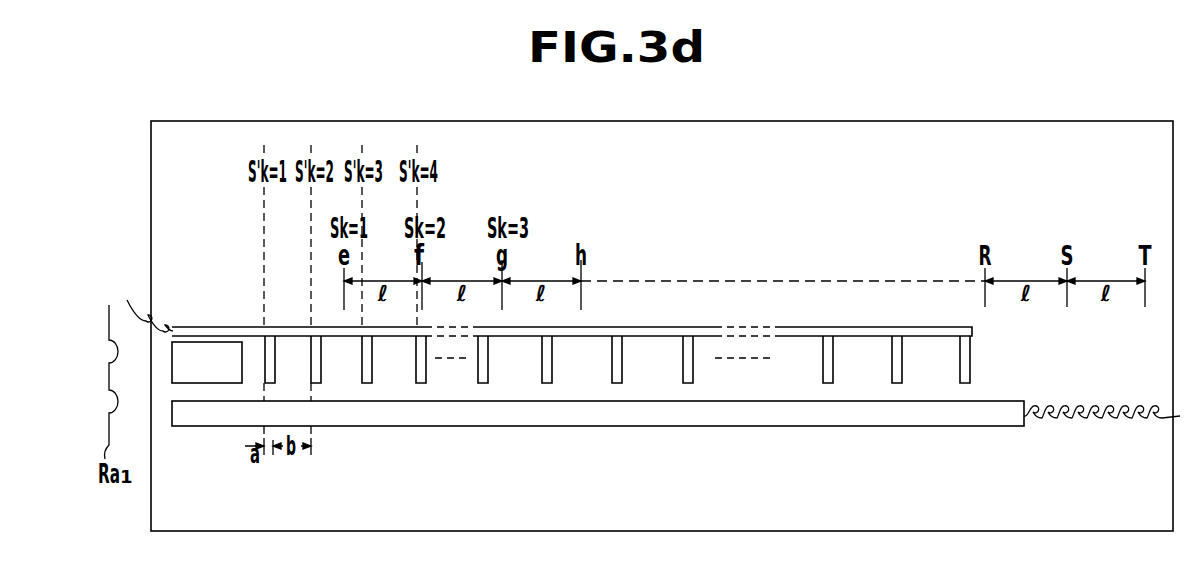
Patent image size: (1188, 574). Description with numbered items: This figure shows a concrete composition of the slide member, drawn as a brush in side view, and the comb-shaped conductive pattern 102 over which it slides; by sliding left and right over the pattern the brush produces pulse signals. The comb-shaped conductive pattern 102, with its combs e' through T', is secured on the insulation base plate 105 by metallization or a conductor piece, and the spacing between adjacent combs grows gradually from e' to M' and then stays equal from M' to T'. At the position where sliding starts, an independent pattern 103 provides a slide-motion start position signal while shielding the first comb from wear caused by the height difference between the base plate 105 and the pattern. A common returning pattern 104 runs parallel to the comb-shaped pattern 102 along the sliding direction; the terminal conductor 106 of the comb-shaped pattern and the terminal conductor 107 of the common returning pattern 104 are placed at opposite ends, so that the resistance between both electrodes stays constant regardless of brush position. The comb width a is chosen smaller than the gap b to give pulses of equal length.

The comb-shaped conductive pattern 102 is at (243, 327).
The independent pattern 103 is at (197, 352).
The common returning pattern 104 is at (204, 412).
The insulation base plate 105 is at (445, 135).
The terminal conductor of the comb-shaped pattern 106 is at (134, 303).
The terminal conductor of the common returning pattern 107 is at (1102, 429).